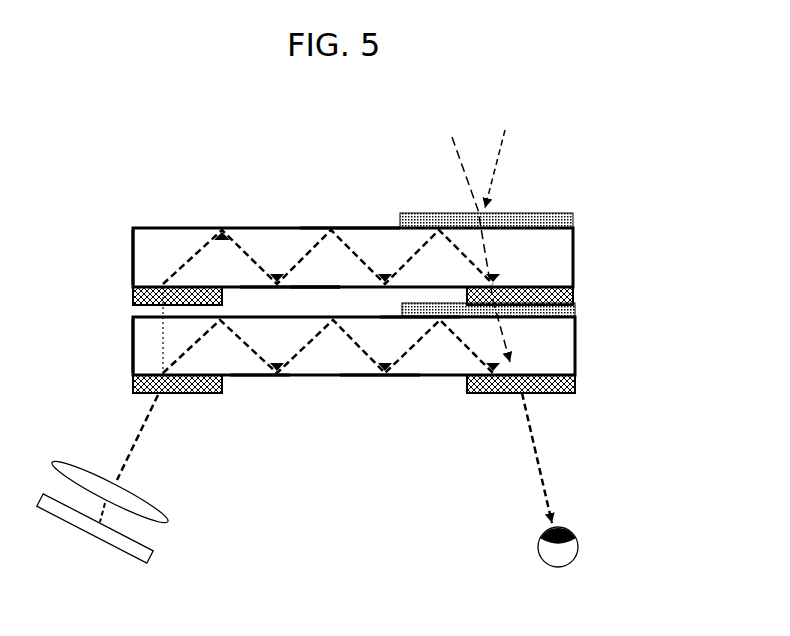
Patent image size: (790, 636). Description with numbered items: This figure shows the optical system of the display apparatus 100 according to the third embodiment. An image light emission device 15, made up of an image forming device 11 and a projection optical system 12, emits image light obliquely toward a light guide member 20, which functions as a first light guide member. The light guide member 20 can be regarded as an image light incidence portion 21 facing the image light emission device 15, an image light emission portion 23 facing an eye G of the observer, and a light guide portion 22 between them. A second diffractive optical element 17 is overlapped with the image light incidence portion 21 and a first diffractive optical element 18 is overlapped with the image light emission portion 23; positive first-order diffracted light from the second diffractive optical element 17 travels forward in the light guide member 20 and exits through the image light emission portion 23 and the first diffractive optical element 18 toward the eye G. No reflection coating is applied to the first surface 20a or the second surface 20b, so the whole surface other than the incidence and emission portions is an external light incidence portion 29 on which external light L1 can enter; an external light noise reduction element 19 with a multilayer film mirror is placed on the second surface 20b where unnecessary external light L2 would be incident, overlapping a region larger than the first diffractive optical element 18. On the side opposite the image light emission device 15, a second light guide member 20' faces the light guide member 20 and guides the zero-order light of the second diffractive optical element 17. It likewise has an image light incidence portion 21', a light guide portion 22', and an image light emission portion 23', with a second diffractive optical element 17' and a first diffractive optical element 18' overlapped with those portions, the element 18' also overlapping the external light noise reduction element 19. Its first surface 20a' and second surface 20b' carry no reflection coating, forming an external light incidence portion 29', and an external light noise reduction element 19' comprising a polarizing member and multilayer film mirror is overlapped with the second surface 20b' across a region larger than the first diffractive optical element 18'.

The display apparatus 100 is at (522, 92).
The light guide member 20' is at (322, 233).
The light guide member 20 is at (404, 350).
The external light noise reduction element 19' is at (571, 208).
The external light noise reduction element 19 is at (547, 297).
The second diffractive optical element 17' is at (193, 247).
The second diffractive optical element 17 is at (177, 419).
The first diffractive optical element 18' is at (557, 274).
The first diffractive optical element 18 is at (554, 396).
The image light incidence portion 21' is at (113, 257).
The image light incidence portion 21 is at (113, 346).
The first surface 20a' is at (350, 211).
The second surface 20b' is at (290, 223).
The first surface 20a is at (420, 388).
The second surface 20b is at (380, 397).
The light guide portion 22' is at (301, 358).
The light guide portion 22 is at (256, 428).
The external light incidence portion 29' is at (356, 335).
The external light incidence portion 29 is at (434, 407).
The image light emission portion 23' is at (512, 235).
The image light emission portion 23 is at (594, 344).
The external light L1 is at (477, 238).
The unnecessary external light L2 is at (504, 169).
The image light emission device 15 is at (233, 518).
The projection optical system 12 is at (168, 521).
The image forming device 11 is at (152, 561).
The eye G is at (578, 553).